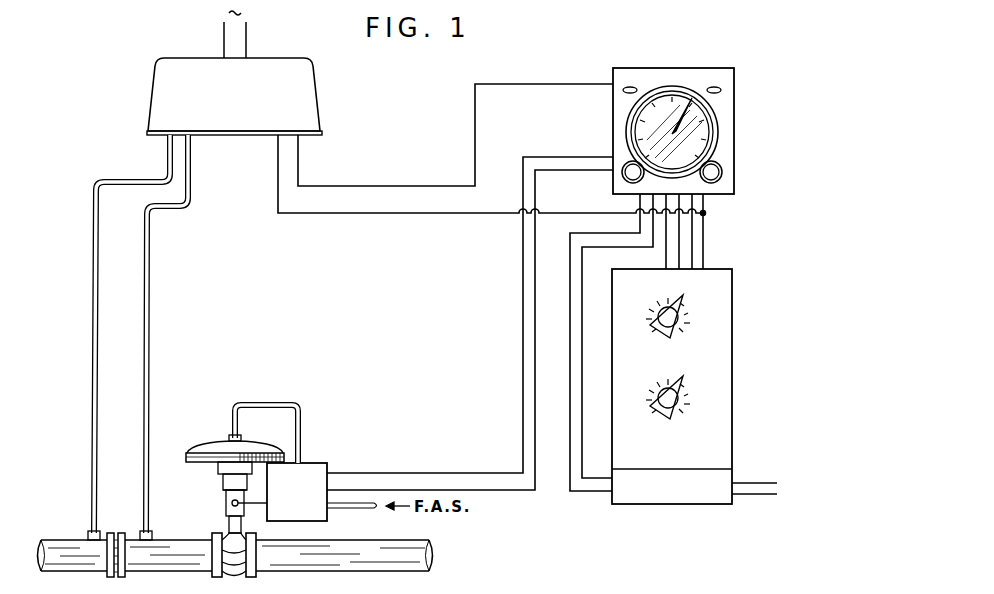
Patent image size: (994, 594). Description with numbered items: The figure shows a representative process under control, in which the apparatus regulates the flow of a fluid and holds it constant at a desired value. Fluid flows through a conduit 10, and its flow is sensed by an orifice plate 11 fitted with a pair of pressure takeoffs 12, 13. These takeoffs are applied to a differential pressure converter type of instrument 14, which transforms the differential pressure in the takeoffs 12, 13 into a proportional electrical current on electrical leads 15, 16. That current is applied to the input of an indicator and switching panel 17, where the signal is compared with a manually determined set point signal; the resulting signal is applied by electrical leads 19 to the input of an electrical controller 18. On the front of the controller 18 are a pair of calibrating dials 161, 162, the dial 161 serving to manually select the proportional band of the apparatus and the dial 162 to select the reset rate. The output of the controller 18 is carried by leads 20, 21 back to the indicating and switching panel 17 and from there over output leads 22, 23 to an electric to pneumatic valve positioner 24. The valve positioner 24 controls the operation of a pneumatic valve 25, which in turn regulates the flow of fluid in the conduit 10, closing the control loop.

The conduit 10 is at (182, 548).
The orifice plate 11 is at (117, 527).
The pressure takeoff 12 is at (90, 351).
The pressure takeoff 13 is at (150, 353).
The differential pressure converter type of instrument 14 is at (165, 86).
The electrical lead 15 is at (392, 211).
The electrical lead 16 is at (390, 185).
The indicator and switching panel 17 is at (668, 67).
The electrical controller 18 is at (718, 306).
The electrical leads 19 is at (667, 240).
The lead 20 is at (570, 399).
The lead 21 is at (583, 397).
The output lead 22 is at (520, 318).
The output lead 23 is at (537, 318).
The electric to pneumatic valve positioner 24 is at (312, 478).
The pneumatic valve 25 is at (204, 446).
The calibrating dial 161 is at (684, 321).
The calibrated dial 162 is at (684, 400).